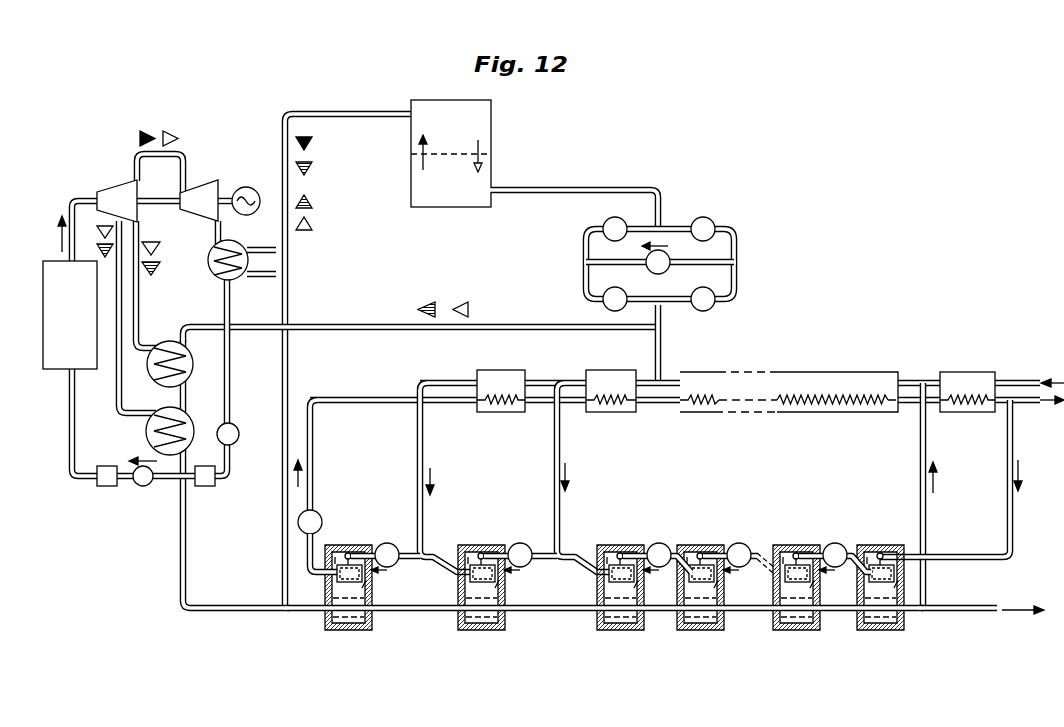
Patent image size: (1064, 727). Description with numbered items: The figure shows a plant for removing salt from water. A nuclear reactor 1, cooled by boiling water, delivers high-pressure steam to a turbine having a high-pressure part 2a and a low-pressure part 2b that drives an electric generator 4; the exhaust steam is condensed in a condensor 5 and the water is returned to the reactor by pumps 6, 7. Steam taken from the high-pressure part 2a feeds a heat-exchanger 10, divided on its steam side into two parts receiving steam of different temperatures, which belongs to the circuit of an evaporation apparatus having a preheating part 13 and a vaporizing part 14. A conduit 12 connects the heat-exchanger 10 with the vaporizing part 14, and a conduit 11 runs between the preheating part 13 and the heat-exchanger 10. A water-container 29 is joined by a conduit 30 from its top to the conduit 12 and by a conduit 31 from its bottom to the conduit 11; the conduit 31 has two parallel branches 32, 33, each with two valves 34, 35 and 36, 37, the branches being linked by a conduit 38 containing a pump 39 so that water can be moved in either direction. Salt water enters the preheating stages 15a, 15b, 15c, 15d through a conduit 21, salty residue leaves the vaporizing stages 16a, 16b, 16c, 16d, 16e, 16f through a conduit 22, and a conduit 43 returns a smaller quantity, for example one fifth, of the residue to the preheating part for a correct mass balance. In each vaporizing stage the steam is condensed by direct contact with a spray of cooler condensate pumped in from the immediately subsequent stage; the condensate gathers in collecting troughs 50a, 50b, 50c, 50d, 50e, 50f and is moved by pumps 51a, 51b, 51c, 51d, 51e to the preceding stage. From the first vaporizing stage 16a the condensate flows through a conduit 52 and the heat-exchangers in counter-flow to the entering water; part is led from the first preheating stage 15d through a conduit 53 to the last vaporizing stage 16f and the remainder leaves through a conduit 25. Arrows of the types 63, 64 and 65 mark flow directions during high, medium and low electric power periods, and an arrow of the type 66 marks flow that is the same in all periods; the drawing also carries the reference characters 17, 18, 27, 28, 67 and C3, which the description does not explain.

The nuclear reactor 1 is at (50, 312).
The high-pressure part 2a is at (121, 185).
The low-pressure part 2b is at (202, 188).
The electric generator 4 is at (247, 187).
The condensor 5 is at (210, 253).
The pump 6 is at (236, 441).
The pump 7 is at (150, 486).
The heat-exchanger 10 is at (191, 372).
The conduit 11 is at (657, 350).
The conduit 12 is at (233, 609).
The preheating part 13 is at (818, 366).
The vaporizing part 14 is at (733, 654).
The preheating stage 15a is at (497, 413).
The preheating stage 15b is at (604, 413).
The preheating stage 15c is at (852, 413).
The preheating stage 15d is at (950, 413).
The vaporizing stage 16a is at (360, 631).
The vaporizing stage 16b is at (494, 631).
The vaporizing stage 16c is at (630, 631).
The vaporizing stage 16d is at (713, 631).
The vaporizing stage 16e is at (808, 631).
The vaporizing stage 16f is at (886, 631).
The connecting line 17 is at (497, 330).
The collecting line 18 is at (300, 610).
The conduit 21 is at (1004, 382).
The conduit 22 is at (980, 611).
The conduit 25 is at (1020, 403).
The line 27 is at (555, 472).
The line 28 is at (418, 472).
The water-container 29 is at (491, 116).
The conduit 30 is at (283, 358).
The conduit 31 is at (617, 190).
The branch conduit 32 is at (583, 271).
The branch conduit 33 is at (735, 279).
The valve 34 is at (607, 221).
The valve 35 is at (604, 307).
The valve 36 is at (711, 221).
The valve 37 is at (713, 307).
The conduit 38 is at (712, 258).
The pump 39 is at (656, 273).
The conduit 43 is at (921, 472).
The collecting trough 50a is at (338, 563).
The collecting trough 50b is at (471, 563).
The collecting trough 50c is at (610, 563).
The collecting trough 50d is at (690, 563).
The collecting trough 50e is at (786, 563).
The collecting trough 50f is at (870, 563).
The pump 51a is at (389, 543).
The pump 51b is at (524, 543).
The pump 51c is at (662, 543).
The pump 51d is at (743, 543).
The pump 51e is at (838, 543).
The conduit 52 is at (312, 472).
The conduit 53 is at (1008, 472).
The arrow 63 is at (315, 143).
The arrow 64 is at (314, 168).
The arrow 65 is at (313, 224).
The arrow 66 is at (60, 238).
The float 67 is at (364, 573).
The heat exchanger section C3 is at (714, 413).